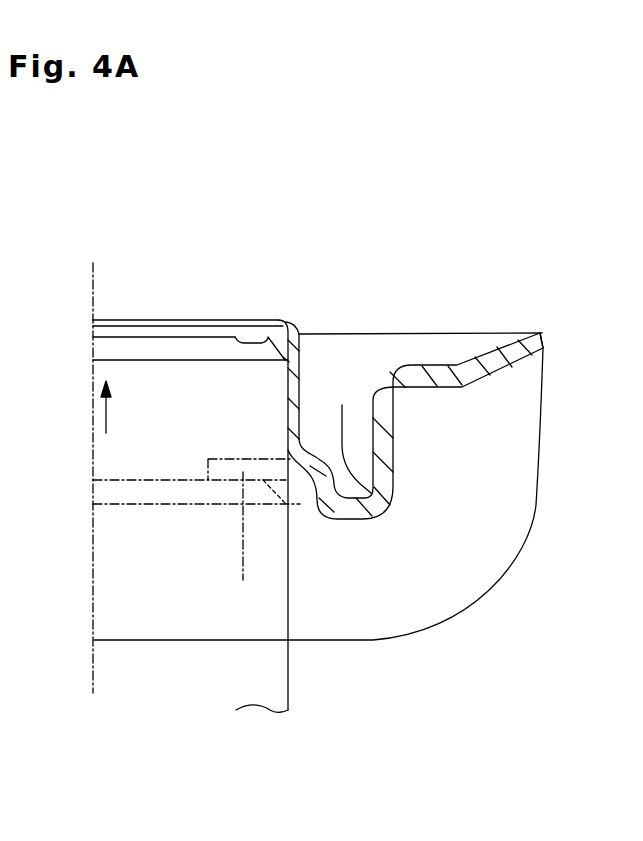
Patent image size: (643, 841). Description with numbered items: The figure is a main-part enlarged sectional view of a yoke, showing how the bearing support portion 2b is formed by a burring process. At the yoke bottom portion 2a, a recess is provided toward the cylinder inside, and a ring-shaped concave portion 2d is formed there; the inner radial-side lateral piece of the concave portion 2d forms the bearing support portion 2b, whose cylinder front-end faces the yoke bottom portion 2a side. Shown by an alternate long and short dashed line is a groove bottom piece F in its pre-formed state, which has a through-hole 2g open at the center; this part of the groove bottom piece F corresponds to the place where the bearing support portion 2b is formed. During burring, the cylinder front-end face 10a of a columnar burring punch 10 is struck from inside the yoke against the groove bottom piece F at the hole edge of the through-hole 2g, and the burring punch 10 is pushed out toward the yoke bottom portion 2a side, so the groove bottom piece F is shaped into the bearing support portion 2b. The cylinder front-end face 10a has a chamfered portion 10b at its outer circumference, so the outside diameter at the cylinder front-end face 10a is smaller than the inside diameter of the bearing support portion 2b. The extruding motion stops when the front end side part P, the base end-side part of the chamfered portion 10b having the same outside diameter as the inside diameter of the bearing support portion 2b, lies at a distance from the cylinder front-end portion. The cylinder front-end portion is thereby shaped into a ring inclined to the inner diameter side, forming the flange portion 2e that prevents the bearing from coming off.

The yoke bottom portion 2a is at (540, 332).
The bearing support portion 2b is at (300, 372).
The concave portion 2d is at (342, 405).
The flange portion 2e is at (283, 325).
The through-hole 2g is at (210, 465).
The burring punch 10 is at (146, 333).
The cylinder front-end face 10a is at (197, 336).
The chamfered portion 10b is at (235, 336).
The front end side part P is at (286, 359).
The groove bottom piece F is at (242, 541).